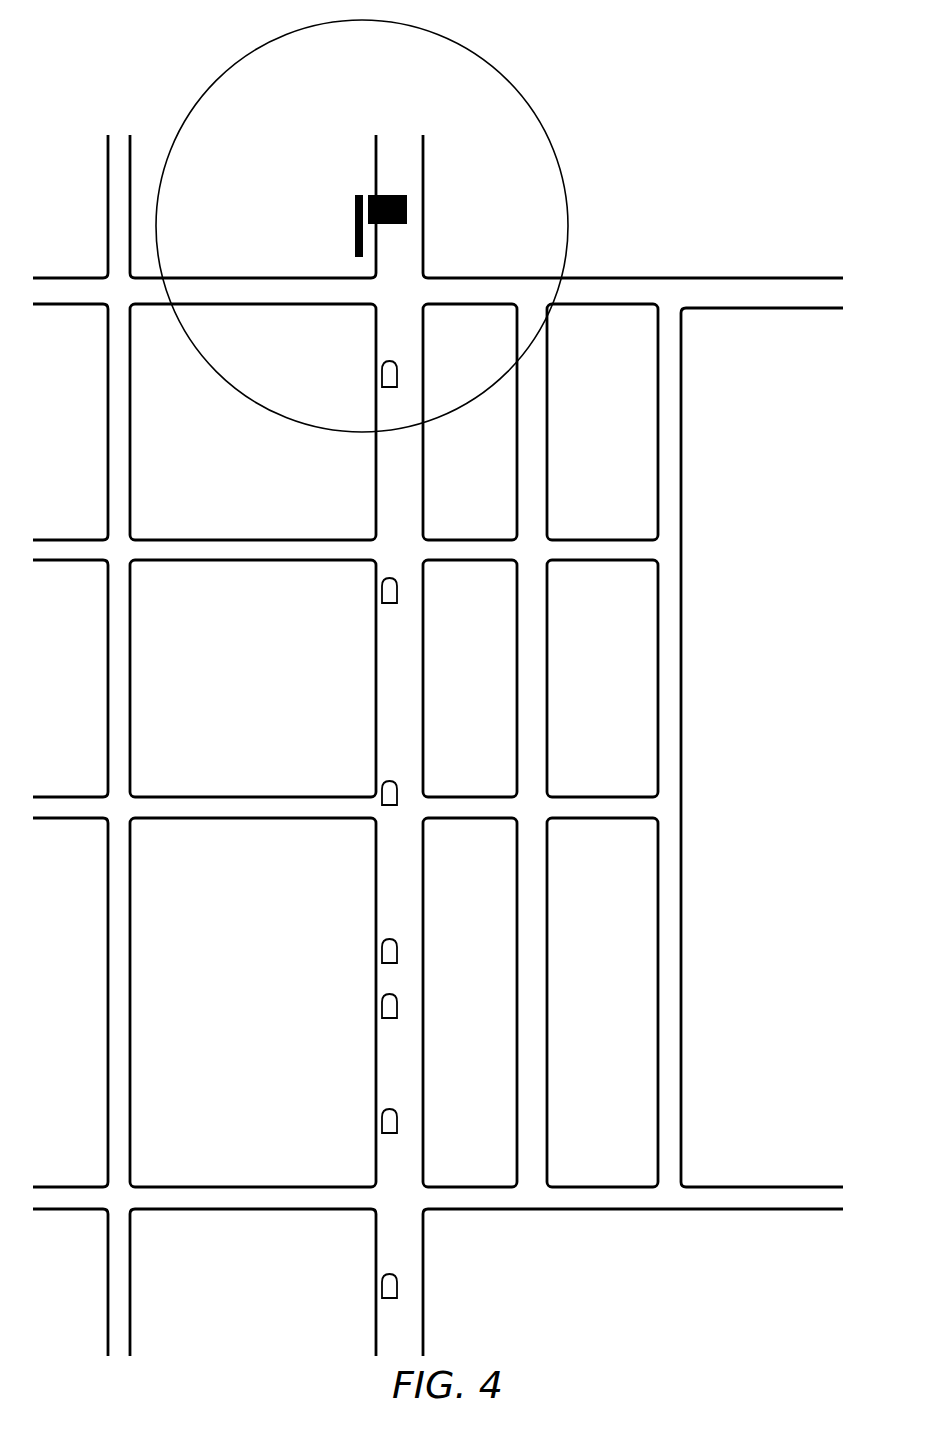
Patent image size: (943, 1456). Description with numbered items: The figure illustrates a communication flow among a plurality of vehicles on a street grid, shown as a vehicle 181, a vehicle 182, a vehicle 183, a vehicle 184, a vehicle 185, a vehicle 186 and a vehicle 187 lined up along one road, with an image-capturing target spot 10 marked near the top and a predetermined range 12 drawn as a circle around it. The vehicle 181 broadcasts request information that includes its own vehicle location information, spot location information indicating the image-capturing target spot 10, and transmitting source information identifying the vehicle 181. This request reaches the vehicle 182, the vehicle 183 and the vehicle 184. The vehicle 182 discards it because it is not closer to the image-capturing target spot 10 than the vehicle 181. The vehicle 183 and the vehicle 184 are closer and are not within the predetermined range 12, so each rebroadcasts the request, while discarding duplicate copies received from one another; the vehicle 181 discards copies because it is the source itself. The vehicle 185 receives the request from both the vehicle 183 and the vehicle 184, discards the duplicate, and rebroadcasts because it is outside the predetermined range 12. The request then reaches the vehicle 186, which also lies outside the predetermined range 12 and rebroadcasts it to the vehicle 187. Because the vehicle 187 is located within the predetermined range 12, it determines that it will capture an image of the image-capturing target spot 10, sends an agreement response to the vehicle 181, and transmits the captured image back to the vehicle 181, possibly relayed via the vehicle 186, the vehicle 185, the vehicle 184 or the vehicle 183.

The image-capturing target spot 10 is at (355, 216).
The predetermined range 12 is at (558, 163).
The vehicle 181 is at (381, 1114).
The vehicle 182 is at (381, 1280).
The vehicle 183 is at (381, 1006).
The vehicle 184 is at (381, 951).
The vehicle 185 is at (381, 792).
The vehicle 186 is at (381, 592).
The vehicle 187 is at (381, 376).